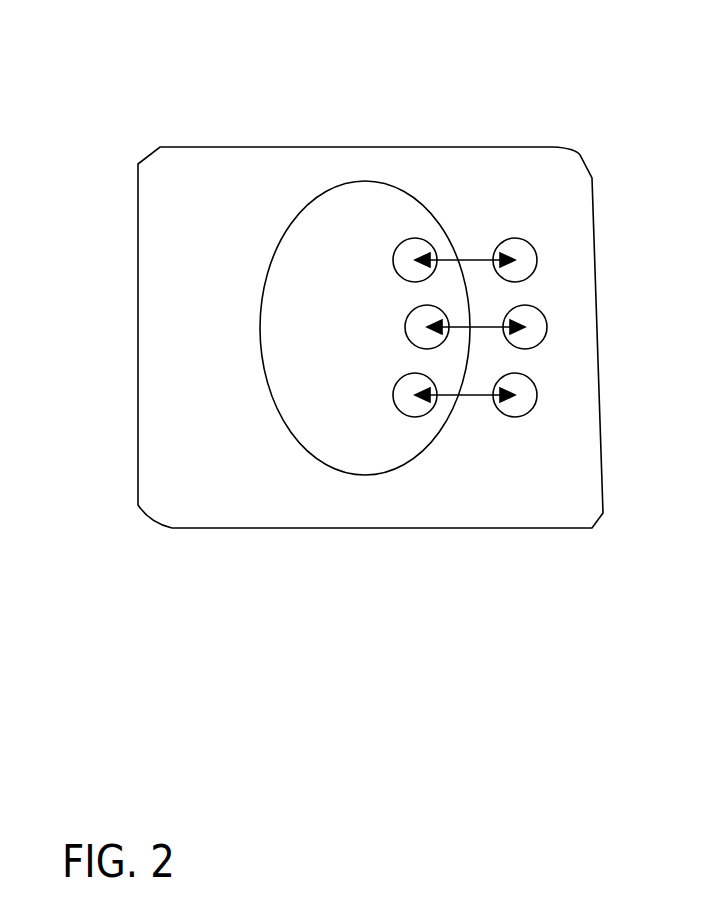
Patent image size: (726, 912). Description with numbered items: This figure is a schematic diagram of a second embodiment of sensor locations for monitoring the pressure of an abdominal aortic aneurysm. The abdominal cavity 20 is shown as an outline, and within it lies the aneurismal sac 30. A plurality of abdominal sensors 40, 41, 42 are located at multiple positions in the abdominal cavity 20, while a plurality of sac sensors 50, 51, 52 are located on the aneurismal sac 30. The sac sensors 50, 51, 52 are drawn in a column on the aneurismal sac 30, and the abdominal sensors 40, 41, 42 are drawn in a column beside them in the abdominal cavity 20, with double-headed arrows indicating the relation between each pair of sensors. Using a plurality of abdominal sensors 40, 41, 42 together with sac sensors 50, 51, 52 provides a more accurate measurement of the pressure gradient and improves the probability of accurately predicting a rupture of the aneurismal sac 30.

The abdominal cavity 20 is at (260, 518).
The aneurismal sac 30 is at (305, 333).
The abdominal sensor 40 is at (547, 327).
The abdominal sensor 41 is at (537, 395).
The abdominal sensor 42 is at (537, 260).
The sac sensor 50 is at (423, 315).
The sac sensor 51 is at (417, 405).
The sac sensor 52 is at (420, 240).